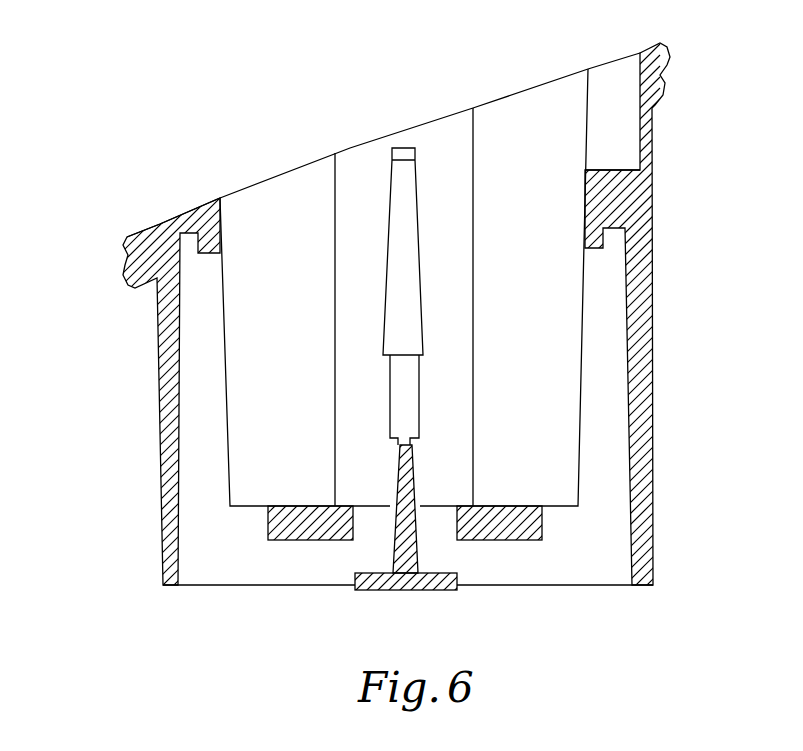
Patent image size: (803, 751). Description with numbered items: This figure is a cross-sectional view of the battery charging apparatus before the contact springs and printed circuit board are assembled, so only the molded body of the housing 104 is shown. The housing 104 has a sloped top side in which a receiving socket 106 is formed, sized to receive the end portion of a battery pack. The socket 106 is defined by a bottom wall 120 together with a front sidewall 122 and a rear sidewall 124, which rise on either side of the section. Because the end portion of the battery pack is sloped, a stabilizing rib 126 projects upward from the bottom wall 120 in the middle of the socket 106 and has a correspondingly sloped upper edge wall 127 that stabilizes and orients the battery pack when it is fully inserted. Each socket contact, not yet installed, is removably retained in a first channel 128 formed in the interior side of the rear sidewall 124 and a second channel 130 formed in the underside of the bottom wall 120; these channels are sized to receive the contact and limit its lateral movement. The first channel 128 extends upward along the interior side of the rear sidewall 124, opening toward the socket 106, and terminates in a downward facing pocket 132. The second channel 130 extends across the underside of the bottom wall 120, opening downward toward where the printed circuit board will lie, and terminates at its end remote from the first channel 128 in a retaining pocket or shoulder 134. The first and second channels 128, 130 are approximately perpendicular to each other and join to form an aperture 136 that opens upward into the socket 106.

The housing 104 is at (162, 232).
The receiving socket 106 is at (288, 192).
The bottom wall 120 is at (278, 517).
The front sidewall 122 is at (180, 332).
The rear sidewall 124 is at (583, 193).
The stabilizing rib 126 is at (386, 386).
The upper edge wall 127 is at (410, 403).
The first channel 128 is at (205, 388).
The second channel 130 is at (292, 565).
The downward facing pocket 132 is at (192, 238).
The retaining pocket or shoulder 134 is at (368, 573).
The aperture 136 is at (208, 525).